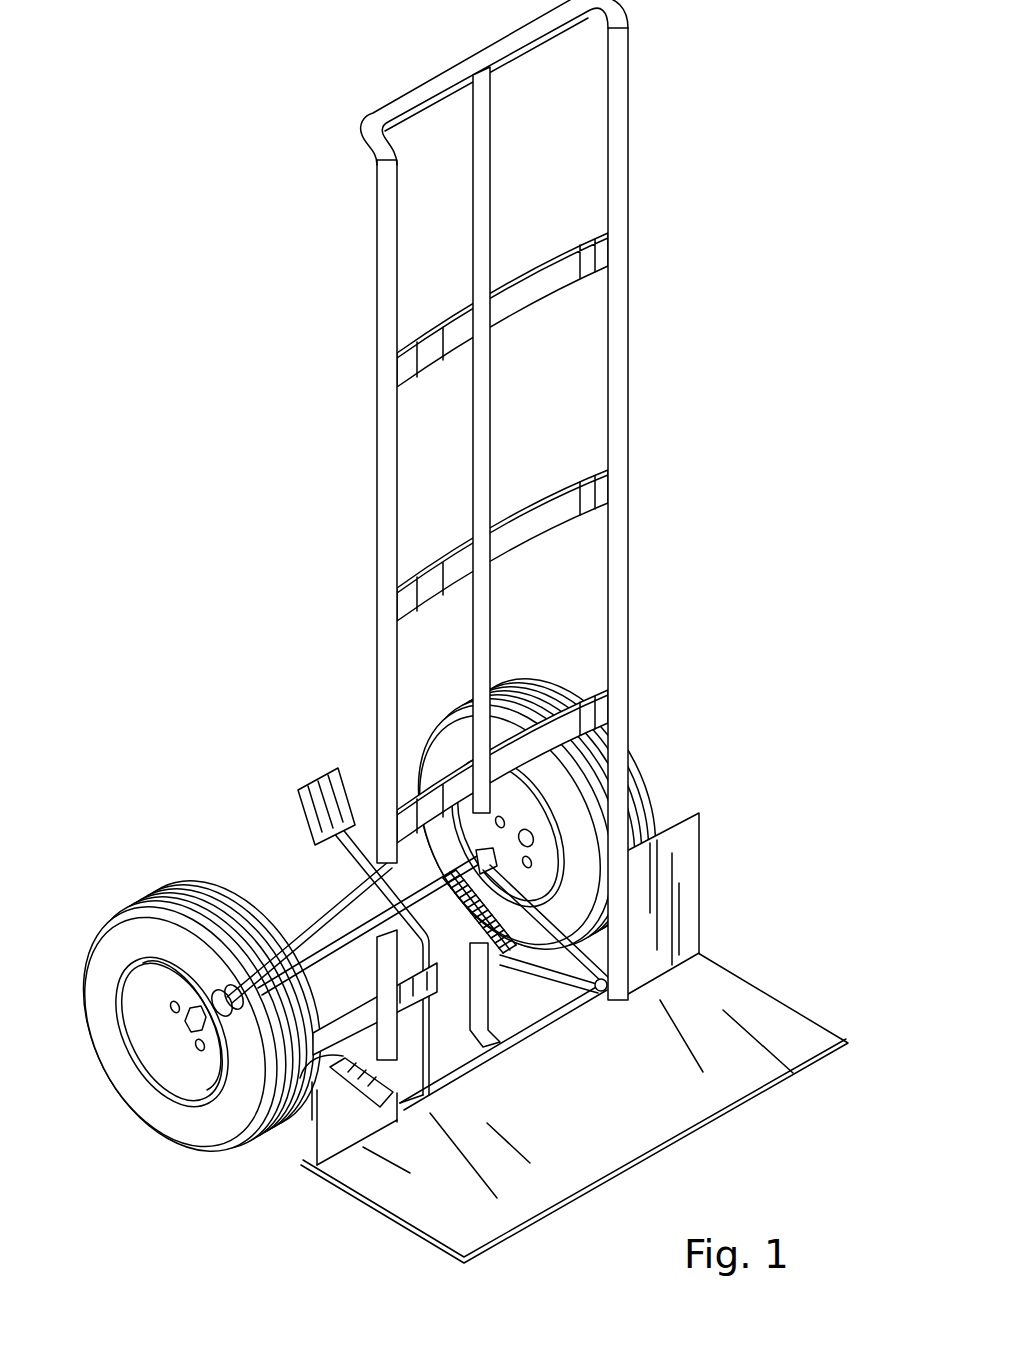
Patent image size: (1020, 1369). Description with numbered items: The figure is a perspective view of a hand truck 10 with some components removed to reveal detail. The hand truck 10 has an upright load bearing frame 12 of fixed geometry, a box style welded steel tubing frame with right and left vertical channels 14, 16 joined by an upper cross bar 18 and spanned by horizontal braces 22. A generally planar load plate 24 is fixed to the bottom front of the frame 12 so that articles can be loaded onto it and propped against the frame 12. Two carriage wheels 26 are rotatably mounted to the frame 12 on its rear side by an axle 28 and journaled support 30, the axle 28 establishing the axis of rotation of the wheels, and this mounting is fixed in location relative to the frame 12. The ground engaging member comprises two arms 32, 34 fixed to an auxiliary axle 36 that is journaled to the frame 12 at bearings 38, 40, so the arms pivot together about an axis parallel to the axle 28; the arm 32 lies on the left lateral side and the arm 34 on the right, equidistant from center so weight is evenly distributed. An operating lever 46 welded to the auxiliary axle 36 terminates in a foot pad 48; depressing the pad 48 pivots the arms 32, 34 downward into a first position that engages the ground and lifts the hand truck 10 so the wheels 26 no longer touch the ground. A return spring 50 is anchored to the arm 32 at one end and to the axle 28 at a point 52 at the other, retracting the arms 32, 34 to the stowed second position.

The hand truck 10 is at (262, 60).
The upright load bearing frame 12 is at (690, 58).
The vertical channel 14 is at (376, 363).
The vertical channel 16 is at (628, 235).
The upper cross bar 18 is at (460, 58).
The horizontal braces 22 is at (520, 283).
The load plate 24 is at (645, 1148).
The carriage wheels 26 is at (148, 905).
The axle 28 is at (353, 953).
The journaled support of the wheels 30 is at (225, 893).
The arm 32 is at (532, 972).
The arm 34 is at (300, 1147).
The auxiliary axle 36 is at (520, 1048).
The bearing 38 is at (597, 1000).
The bearing 40 is at (418, 1105).
The operating lever 46 is at (345, 878).
The foot pad 48 is at (330, 770).
The return spring 50 is at (474, 942).
The anchor point on axle 52 is at (480, 878).